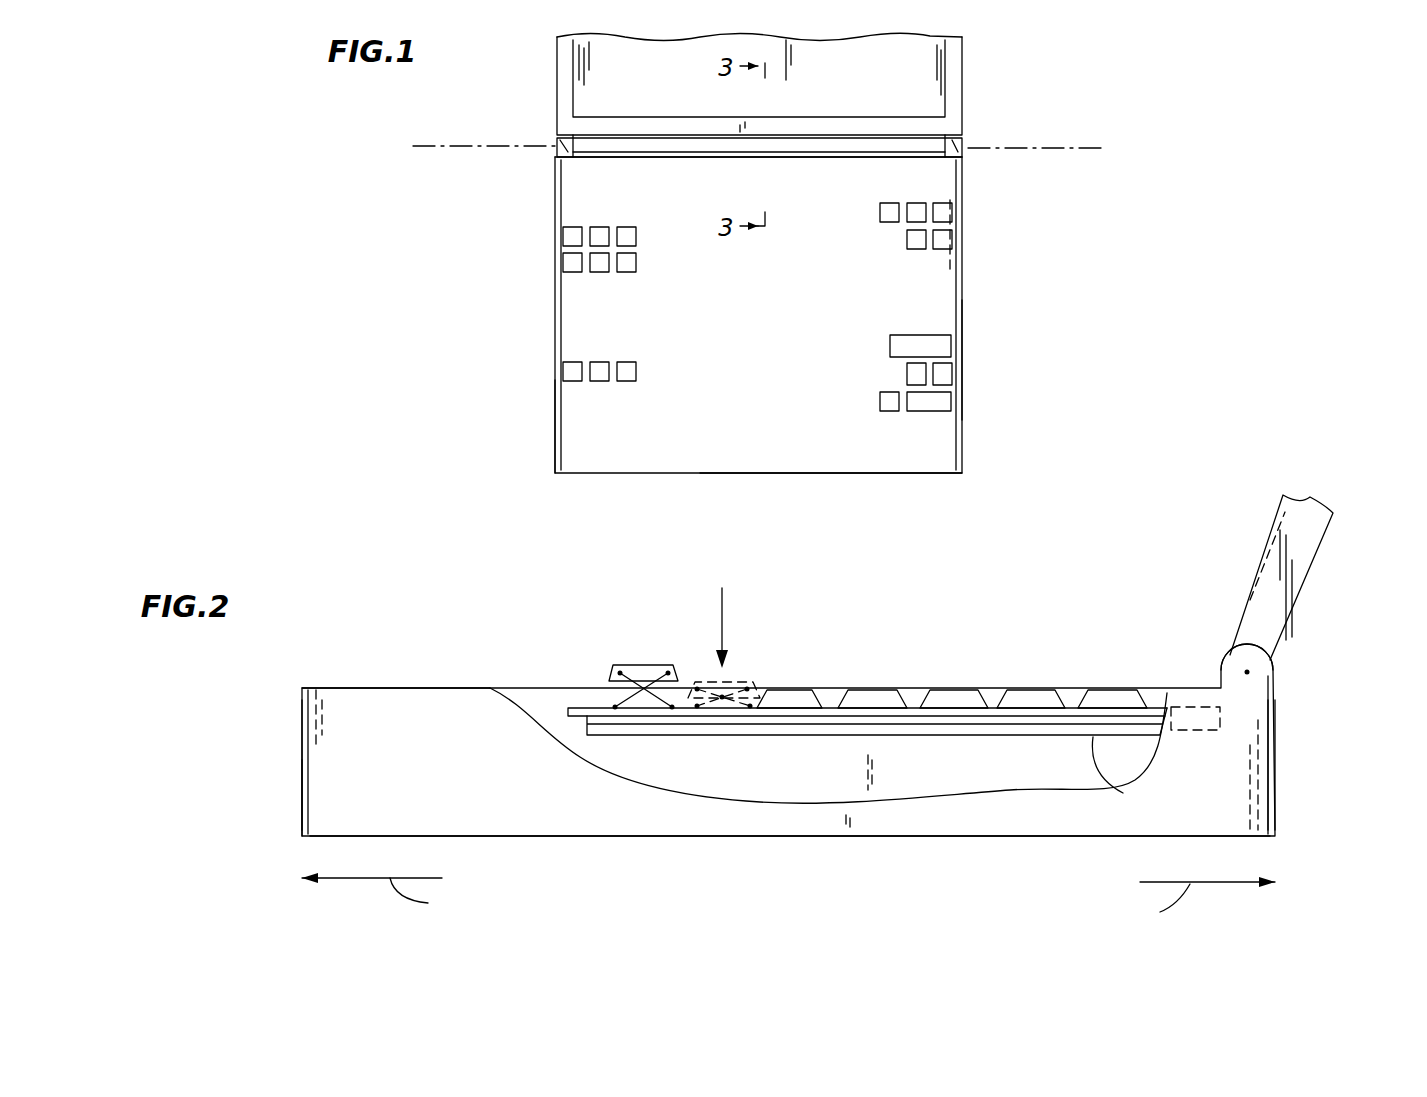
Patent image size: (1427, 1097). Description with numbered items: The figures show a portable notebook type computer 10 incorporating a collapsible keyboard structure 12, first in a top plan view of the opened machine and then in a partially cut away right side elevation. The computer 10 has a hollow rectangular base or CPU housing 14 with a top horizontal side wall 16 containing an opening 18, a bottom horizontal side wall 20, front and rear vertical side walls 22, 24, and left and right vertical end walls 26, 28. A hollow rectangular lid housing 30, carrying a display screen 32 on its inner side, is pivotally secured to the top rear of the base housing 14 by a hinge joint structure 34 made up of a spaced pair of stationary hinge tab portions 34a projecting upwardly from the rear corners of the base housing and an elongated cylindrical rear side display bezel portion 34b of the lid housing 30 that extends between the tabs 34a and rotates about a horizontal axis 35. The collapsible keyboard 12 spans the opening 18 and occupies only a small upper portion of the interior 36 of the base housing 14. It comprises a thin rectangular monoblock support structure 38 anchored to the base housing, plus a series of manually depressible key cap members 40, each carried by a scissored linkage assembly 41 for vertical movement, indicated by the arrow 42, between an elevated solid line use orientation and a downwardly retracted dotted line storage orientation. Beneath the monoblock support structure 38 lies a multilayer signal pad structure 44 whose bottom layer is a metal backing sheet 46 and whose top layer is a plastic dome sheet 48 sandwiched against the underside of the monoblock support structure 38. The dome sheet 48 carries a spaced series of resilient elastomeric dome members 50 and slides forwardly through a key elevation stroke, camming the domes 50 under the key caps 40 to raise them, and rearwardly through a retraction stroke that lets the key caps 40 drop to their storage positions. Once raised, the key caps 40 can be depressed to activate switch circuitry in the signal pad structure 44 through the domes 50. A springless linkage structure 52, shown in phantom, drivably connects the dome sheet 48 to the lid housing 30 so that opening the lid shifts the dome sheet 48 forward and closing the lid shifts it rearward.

In FIG. 1, the portable notebook type computer 10 is at (1010, 290).
In FIG. 2, the portable notebook type computer 10 is at (364, 648).
In FIG. 1, the collapsible keyboard structure 12 is at (590, 345).
In FIG. 2, the collapsible keyboard structure 12 is at (945, 630).
In FIG. 1, the base or CPU housing 14 is at (970, 437).
In FIG. 2, the base or CPU housing 14 is at (300, 715).
In FIG. 1, the top horizontal side wall 16 is at (745, 440).
In FIG. 2, the top horizontal side wall 16 is at (388, 688).
In FIG. 2, the opening 18 is at (610, 712).
In FIG. 2, the bottom horizontal side wall 20 is at (758, 836).
In FIG. 1, the front vertical side wall 22 is at (812, 475).
In FIG. 2, the front vertical side wall 22 is at (300, 798).
In FIG. 1, the rear vertical side wall 24 is at (716, 152).
In FIG. 2, the rear vertical side wall 24 is at (1280, 795).
In FIG. 1, the left vertical end wall 26 is at (555, 445).
In FIG. 2, the left vertical end wall 26 is at (905, 785).
In FIG. 1, the right vertical end wall 28 is at (963, 355).
In FIG. 2, the right vertical end wall 28 is at (400, 785).
In FIG. 1, the lid housing 30 is at (970, 92).
In FIG. 2, the lid housing 30 is at (1318, 582).
In FIG. 1, the display screen 32 is at (658, 74).
In FIG. 2, the display screen 32 is at (1258, 541).
In FIG. 1, the hinge joint structure 34 is at (824, 130).
In FIG. 1, the stationary hinge tab portions 34a is at (555, 133).
In FIG. 2, the stationary hinge tab portions 34a is at (1260, 666).
In FIG. 1, the rear side display bezel portion 34b is at (872, 150).
In FIG. 1, the horizontal axis 35 is at (482, 150).
In FIG. 2, the horizontal axis 35 is at (1250, 676).
In FIG. 2, the interior 36 is at (1000, 762).
In FIG. 2, the monoblock support structure 38 is at (677, 675).
In FIG. 1, the key cap members 40 is at (637, 263).
In FIG. 2, the key cap members 40 is at (612, 665).
In FIG. 2, the scissored linkage assembly 41 is at (660, 665).
In FIG. 2, the arrow 42 is at (728, 600).
In FIG. 2, the multilayer signal pad structure 44 is at (572, 729).
In FIG. 2, the metal backing sheet 46 is at (1124, 778).
In FIG. 2, the dome sheet 48 is at (610, 710).
In FIG. 2, the elastomeric dome members 50 is at (790, 690).
In FIG. 2, the springless linkage structure 52 is at (1232, 722).